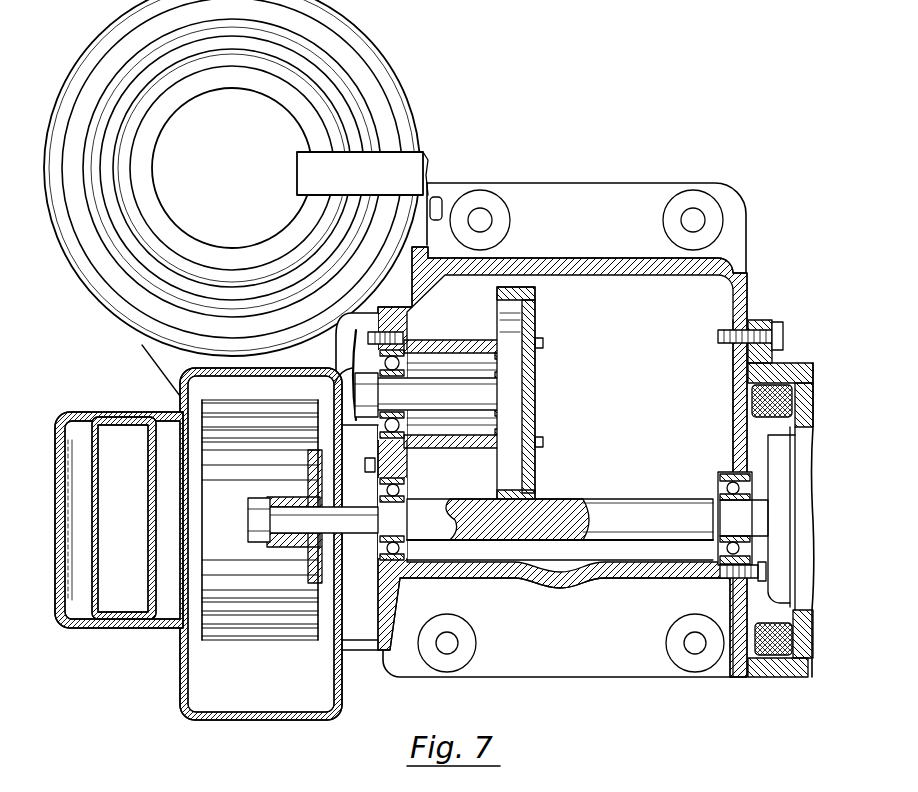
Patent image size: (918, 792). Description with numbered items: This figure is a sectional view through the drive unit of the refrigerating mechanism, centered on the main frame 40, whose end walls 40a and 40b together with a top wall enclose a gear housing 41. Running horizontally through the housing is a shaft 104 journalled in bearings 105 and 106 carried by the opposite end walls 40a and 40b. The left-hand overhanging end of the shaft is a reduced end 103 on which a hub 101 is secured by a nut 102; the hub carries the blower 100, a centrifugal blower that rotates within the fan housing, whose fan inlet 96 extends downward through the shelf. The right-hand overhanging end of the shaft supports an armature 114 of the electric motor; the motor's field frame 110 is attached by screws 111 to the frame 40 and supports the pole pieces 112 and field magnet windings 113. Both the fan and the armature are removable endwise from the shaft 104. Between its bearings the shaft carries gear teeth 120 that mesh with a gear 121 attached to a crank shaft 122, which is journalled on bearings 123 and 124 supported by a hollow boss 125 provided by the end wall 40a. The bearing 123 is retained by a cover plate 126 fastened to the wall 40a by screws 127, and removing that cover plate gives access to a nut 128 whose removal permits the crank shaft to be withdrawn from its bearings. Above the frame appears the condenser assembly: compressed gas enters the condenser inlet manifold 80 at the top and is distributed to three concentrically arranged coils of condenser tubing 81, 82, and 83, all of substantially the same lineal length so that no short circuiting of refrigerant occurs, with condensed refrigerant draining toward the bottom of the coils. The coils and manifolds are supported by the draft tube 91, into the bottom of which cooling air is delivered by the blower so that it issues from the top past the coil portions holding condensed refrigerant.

The main frame 40 is at (583, 665).
The end wall 40a is at (397, 465).
The end wall 40b is at (733, 360).
The gear housing 41 is at (630, 318).
The condenser inlet manifold 80 is at (393, 162).
The condenser tubing coil 81 is at (128, 48).
The condenser tubing coil 82 is at (210, 50).
The condenser tubing coil 83 is at (275, 95).
The draft tube 91 is at (395, 88).
The fan inlet 96 is at (127, 600).
The blower 100 is at (207, 625).
The hub 101 is at (297, 542).
The nut 102 is at (248, 513).
The reduced end 103 is at (300, 520).
The shaft 104 is at (440, 495).
The bearing 105 is at (392, 473).
The bearing 106 is at (730, 487).
The field frame 110 is at (795, 363).
The screws 111 is at (780, 320).
The pole pieces 112 is at (805, 400).
The field magnet windings 113 is at (762, 407).
The armature 114 is at (795, 460).
The gear teeth 120 is at (547, 493).
The gear 121 is at (536, 297).
The crank shaft 122 is at (507, 392).
The bearing 123 is at (417, 335).
The bearing 124 is at (498, 347).
The hollow boss 125 is at (447, 341).
The cover plate 126 is at (340, 408).
The screws 127 is at (370, 462).
The nut 128 is at (370, 395).